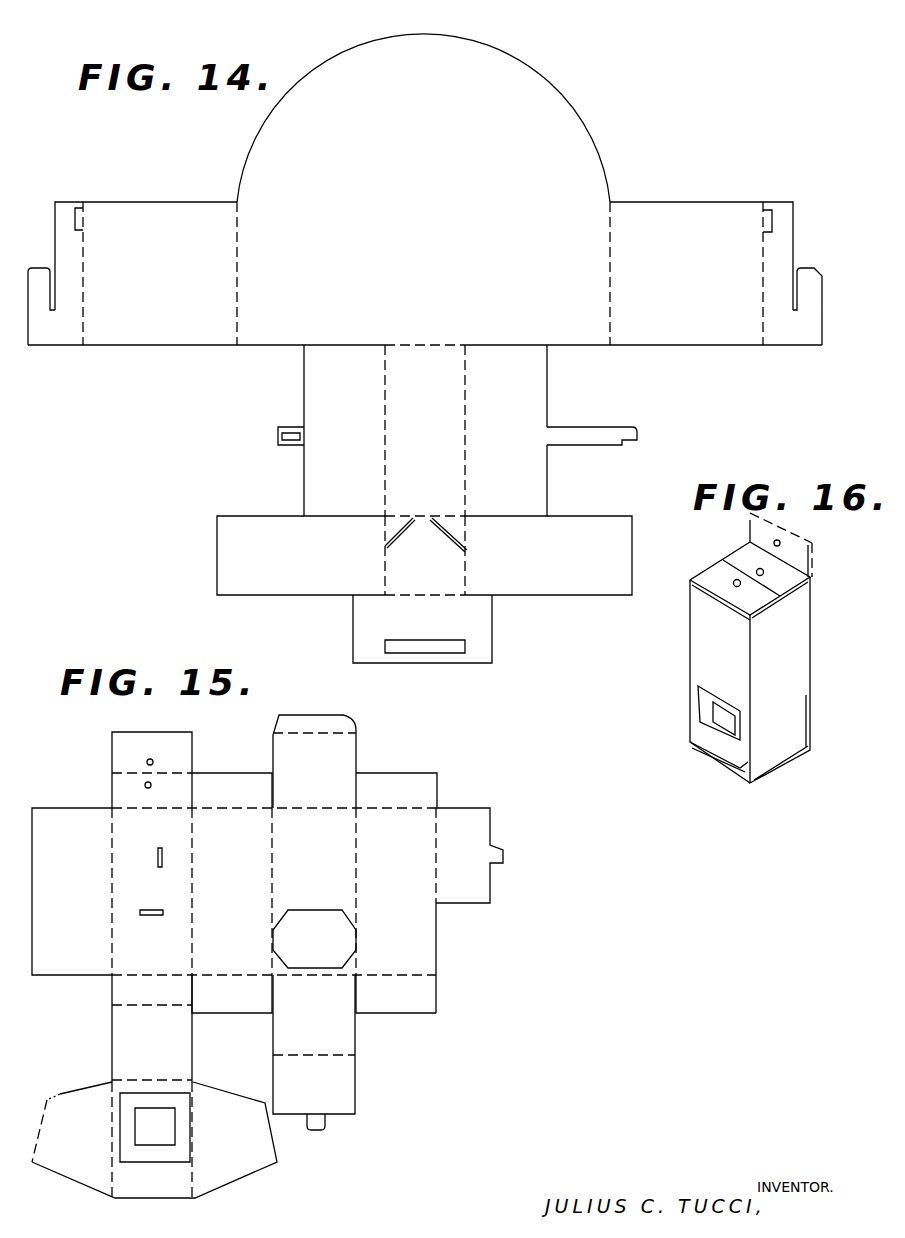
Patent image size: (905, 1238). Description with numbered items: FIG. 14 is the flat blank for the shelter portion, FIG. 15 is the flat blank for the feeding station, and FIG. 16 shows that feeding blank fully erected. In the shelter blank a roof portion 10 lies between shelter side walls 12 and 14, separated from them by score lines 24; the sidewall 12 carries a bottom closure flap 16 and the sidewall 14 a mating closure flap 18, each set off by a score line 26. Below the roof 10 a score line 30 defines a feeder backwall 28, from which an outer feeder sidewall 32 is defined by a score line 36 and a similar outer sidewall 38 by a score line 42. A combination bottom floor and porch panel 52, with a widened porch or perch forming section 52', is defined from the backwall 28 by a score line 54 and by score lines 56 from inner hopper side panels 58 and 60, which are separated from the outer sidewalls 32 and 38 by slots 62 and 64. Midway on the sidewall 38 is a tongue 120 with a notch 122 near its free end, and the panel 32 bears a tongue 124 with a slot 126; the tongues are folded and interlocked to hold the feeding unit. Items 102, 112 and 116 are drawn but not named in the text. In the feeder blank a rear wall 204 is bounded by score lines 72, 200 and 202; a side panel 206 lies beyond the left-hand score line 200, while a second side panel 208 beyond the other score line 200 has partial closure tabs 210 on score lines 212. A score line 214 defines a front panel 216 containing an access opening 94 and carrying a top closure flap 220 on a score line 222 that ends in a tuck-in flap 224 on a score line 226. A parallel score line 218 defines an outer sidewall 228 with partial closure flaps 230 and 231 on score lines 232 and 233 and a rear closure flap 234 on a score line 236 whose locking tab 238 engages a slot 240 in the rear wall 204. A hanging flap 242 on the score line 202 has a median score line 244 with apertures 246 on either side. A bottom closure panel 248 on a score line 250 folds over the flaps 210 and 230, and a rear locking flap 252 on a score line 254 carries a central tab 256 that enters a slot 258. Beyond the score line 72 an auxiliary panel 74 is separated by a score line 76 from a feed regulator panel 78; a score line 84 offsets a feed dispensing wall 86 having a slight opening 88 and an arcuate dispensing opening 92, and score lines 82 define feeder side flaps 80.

In FIG. 14, the roof portion 10 is at (438, 161).
In FIG. 14, the shelter side wall 12 is at (162, 281).
In FIG. 14, the shelter side wall 14 is at (698, 279).
In FIG. 14, the bottom closure flap 16 is at (58, 347).
In FIG. 14, the mating closure flap 18 is at (790, 347).
In FIG. 14, the score lines 24 is at (237, 287).
In FIG. 14, the score lines 26 is at (763, 302).
In FIG. 14, the feeder backwall 28 is at (432, 426).
In FIG. 14, the score line 30 is at (438, 322).
In FIG. 14, the outer feeder sidewall 32 is at (355, 446).
In FIG. 14, the score line 36 is at (385, 462).
In FIG. 14, the outer sidewall 38 is at (517, 446).
In FIG. 14, the score line 42 is at (465, 407).
In FIG. 14, the combination bottom floor and porch panel 52 is at (425, 561).
In FIG. 14, the porch or perch forming section 52' is at (392, 629).
In FIG. 14, the score line 54 is at (400, 516).
In FIG. 14, the score lines 56 is at (385, 564).
In FIG. 14, the inner feeder side panel 58 is at (299, 573).
In FIG. 14, the inner hopper side panel 60 is at (571, 574).
In FIG. 14, the slot 62 is at (340, 516).
In FIG. 14, the slot 64 is at (498, 516).
In FIG. 15, the score line 72 is at (170, 975).
In FIG. 15, the auxiliary panel 74 is at (146, 1004).
In FIG. 15, the score line 76 is at (152, 1006).
In FIG. 15, the feed regulator panel 78 is at (162, 1046).
In FIG. 15, the feeder side flaps 80 is at (87, 1138).
In FIG. 15, the score lines 82 is at (110, 1158).
In FIG. 15, the score line 84 is at (110, 1078).
In FIG. 16, the feed dispensing wall 86 is at (712, 730).
In FIG. 15, the feed dispensing wall 86 is at (163, 1199).
In FIG. 16, the opening 88 is at (715, 706).
In FIG. 15, the opening 88 is at (140, 1163).
In FIG. 16, the arcuate dispensing opening 92 is at (745, 760).
In FIG. 15, the arcuate dispensing opening 92 is at (158, 1072).
In FIG. 15, the access opening 94 is at (352, 927).
In FIG. 14, the locking tab 102 is at (40, 272).
In FIG. 14, the locking tab 112 is at (812, 282).
In FIG. 14, the slit 116 is at (440, 531).
In FIG. 14, the tongue 120 is at (585, 426).
In FIG. 14, the notch 122 is at (624, 441).
In FIG. 14, the tongue 124 is at (290, 425).
In FIG. 14, the slot 126 is at (278, 444).
In FIG. 15, the score lines 200 is at (112, 899).
In FIG. 15, the score line 202 is at (158, 812).
In FIG. 15, the rear wall 204 is at (180, 909).
In FIG. 15, the side panel 206 is at (93, 886).
In FIG. 16, the second side panel 208 is at (798, 671).
In FIG. 15, the second side panel 208 is at (249, 901).
In FIG. 15, the partial closure tabs 210 is at (249, 811).
In FIG. 15, the score lines 212 is at (248, 966).
In FIG. 15, the score line 214 is at (273, 858).
In FIG. 16, the front panel 216 is at (736, 656).
In FIG. 15, the front panel 216 is at (333, 896).
In FIG. 15, the score line 218 is at (356, 849).
In FIG. 15, the top closure flap 220 is at (333, 779).
In FIG. 15, the score line 222 is at (303, 808).
In FIG. 15, the tuck-in flap 224 is at (335, 699).
In FIG. 15, the score line 226 is at (338, 733).
In FIG. 15, the outer sidewall 228 is at (415, 891).
In FIG. 15, the partial closure flap 230 is at (413, 1009).
In FIG. 15, the partial closure flap 231 is at (409, 809).
In FIG. 15, the score line 232 is at (415, 975).
In FIG. 15, the score line 233 is at (437, 808).
In FIG. 15, the rear closure flap 234 is at (479, 881).
In FIG. 15, the score line 236 is at (436, 837).
In FIG. 15, the locking tab 238 is at (503, 850).
In FIG. 15, the slot 240 is at (157, 857).
In FIG. 16, the hanging flap 242 is at (708, 572).
In FIG. 15, the hanging flap 242 is at (112, 786).
In FIG. 16, the median score line 244 is at (813, 547).
In FIG. 15, the median score line 244 is at (178, 770).
In FIG. 15, the apertures 246 is at (152, 783).
In FIG. 15, the bottom closure panel 248 is at (327, 1036).
In FIG. 15, the score line 250 is at (312, 980).
In FIG. 15, the rear locking flap 252 is at (327, 1098).
In FIG. 15, the score line 254 is at (296, 1055).
In FIG. 15, the central tab 256 is at (320, 1131).
In FIG. 15, the slot 258 is at (160, 917).